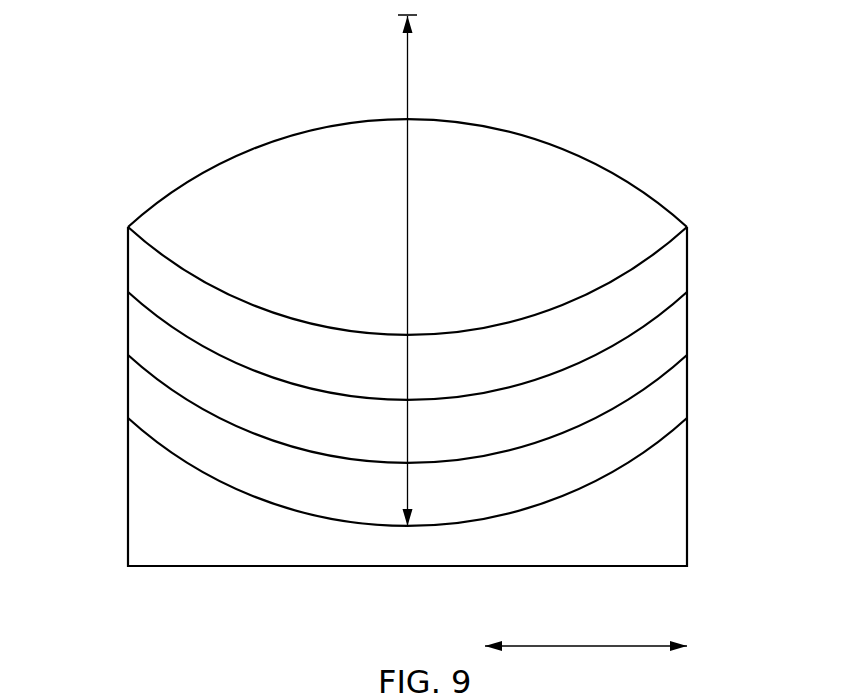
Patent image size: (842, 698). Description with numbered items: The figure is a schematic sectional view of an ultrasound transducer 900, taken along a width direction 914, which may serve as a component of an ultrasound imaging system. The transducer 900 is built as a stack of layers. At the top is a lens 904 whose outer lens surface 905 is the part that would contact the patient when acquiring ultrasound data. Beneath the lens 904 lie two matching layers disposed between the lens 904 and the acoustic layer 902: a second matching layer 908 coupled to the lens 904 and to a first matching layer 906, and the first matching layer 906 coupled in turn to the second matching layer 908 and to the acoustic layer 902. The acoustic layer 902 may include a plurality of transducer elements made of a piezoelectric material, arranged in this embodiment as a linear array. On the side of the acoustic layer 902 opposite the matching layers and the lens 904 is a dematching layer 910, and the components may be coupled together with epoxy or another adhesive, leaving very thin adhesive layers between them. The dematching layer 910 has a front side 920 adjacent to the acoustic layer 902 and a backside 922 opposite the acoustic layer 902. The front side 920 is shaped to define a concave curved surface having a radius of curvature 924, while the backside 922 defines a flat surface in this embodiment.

The ultrasound transducer 900 is at (647, 42).
The acoustic layer 902 is at (633, 446).
The lens 904 is at (511, 249).
The lens surface 905 is at (544, 124).
The first matching layer 906 is at (511, 431).
The second matching layer 908 is at (511, 367).
The dematching layer 910 is at (616, 536).
The width direction 914 is at (631, 644).
The front side 920 is at (449, 506).
The backside 922 is at (527, 585).
The radius of curvature 924 is at (410, 47).